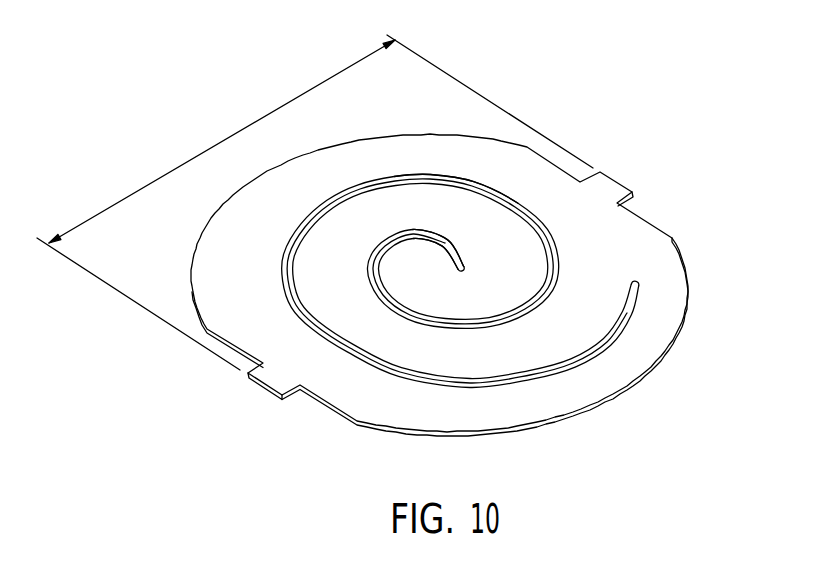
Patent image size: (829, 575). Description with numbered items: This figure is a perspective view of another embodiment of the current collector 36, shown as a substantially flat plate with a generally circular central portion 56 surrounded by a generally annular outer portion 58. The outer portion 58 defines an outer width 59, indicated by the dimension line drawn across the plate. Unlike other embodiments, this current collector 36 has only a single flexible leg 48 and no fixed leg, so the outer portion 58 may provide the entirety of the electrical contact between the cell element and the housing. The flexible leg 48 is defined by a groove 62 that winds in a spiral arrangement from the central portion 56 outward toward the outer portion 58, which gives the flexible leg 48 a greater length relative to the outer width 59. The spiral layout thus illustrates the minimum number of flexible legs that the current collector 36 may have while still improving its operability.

The current collector 36 is at (446, 228).
The flexible leg 48 is at (448, 269).
The central portion 56 is at (418, 266).
The outer portion 58 is at (316, 165).
The outer width 59 is at (227, 138).
The groove 62 is at (457, 180).